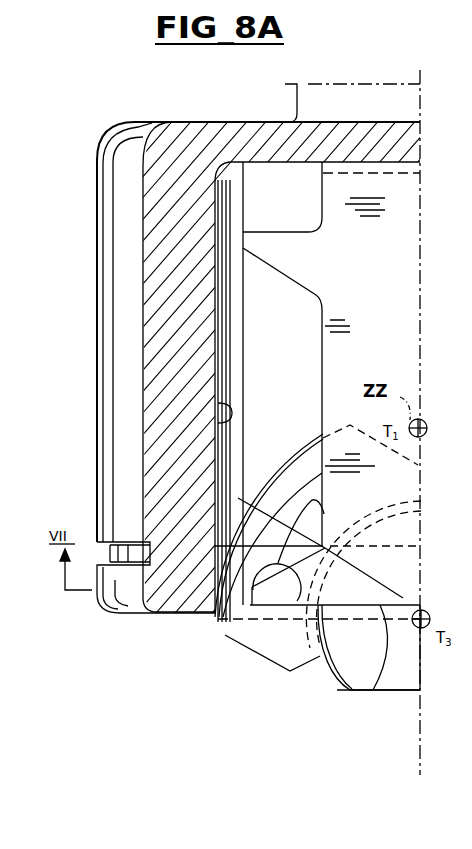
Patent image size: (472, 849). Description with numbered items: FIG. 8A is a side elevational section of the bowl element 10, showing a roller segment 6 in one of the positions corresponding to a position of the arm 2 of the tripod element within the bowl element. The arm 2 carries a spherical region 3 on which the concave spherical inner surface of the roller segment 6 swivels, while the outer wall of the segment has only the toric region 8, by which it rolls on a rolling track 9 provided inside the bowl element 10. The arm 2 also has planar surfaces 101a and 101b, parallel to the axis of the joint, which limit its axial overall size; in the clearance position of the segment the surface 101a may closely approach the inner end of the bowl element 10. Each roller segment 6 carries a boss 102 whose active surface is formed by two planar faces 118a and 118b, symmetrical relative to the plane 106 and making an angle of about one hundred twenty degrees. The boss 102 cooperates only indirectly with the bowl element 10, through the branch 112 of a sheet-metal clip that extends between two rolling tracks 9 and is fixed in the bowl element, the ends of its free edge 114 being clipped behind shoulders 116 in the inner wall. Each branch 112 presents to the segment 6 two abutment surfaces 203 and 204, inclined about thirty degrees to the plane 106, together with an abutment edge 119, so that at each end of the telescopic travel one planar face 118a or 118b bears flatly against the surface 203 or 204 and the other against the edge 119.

The bowl element 10 is at (157, 216).
The abutment surface 203 is at (265, 263).
The abutment edge 119 is at (323, 343).
The branch of the clip 112 is at (355, 365).
The rolling track 9 is at (220, 425).
The toric region 8 is at (250, 536).
The boss 102 is at (207, 572).
The abutment surface 204 is at (242, 620).
The shoulder 116 is at (262, 612).
The roller segment 6 is at (252, 650).
The planar face 118b is at (283, 632).
The spherical region 3 is at (325, 683).
The free edge 114 is at (378, 683).
The arm 2 is at (404, 676).
The surface of the arm 101b is at (391, 696).
The planar face 118a is at (326, 512).
The surface of the arm 101a is at (341, 530).
The plane 106 is at (355, 567).